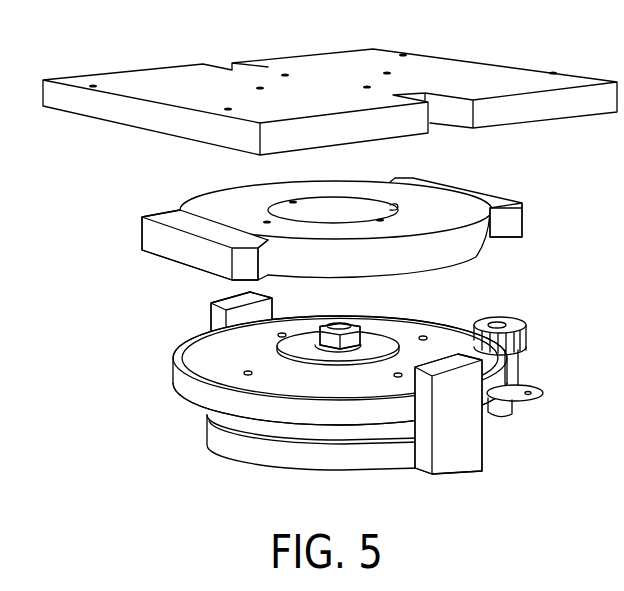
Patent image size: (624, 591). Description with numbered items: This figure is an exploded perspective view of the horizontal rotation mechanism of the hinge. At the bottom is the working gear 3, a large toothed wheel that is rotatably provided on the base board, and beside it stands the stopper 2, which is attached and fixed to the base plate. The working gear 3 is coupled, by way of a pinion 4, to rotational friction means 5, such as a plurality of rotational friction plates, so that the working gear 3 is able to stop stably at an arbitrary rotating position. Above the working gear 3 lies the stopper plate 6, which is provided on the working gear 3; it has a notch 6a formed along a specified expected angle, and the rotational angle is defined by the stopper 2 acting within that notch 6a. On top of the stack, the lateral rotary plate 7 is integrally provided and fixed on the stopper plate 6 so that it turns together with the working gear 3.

The stopper 2 is at (220, 318).
The working gear 3 is at (198, 363).
The pinion 4 is at (527, 322).
The rotational friction means 5 is at (510, 373).
The stopper plate 6 is at (455, 200).
The notch 6a is at (195, 204).
The lateral rotary plate 7 is at (495, 75).